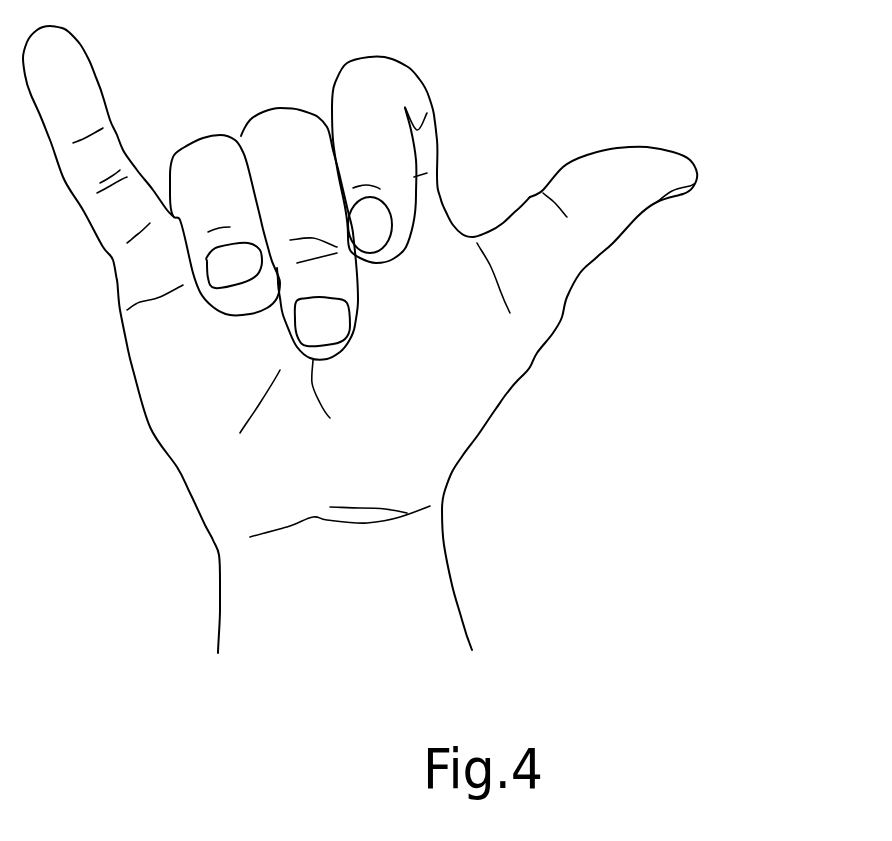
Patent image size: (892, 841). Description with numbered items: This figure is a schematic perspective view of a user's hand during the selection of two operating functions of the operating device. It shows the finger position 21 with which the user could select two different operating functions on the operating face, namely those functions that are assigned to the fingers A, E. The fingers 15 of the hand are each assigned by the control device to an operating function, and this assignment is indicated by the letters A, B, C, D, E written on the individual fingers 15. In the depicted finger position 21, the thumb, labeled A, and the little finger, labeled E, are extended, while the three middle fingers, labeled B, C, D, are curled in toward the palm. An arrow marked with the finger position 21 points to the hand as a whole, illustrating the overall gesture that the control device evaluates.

The fingers 15 is at (360, 327).
The finger position 21 is at (387, 328).
The finger A is at (569, 398).
The finger B is at (431, 160).
The finger C is at (299, 234).
The finger D is at (225, 225).
The finger E is at (98, 153).